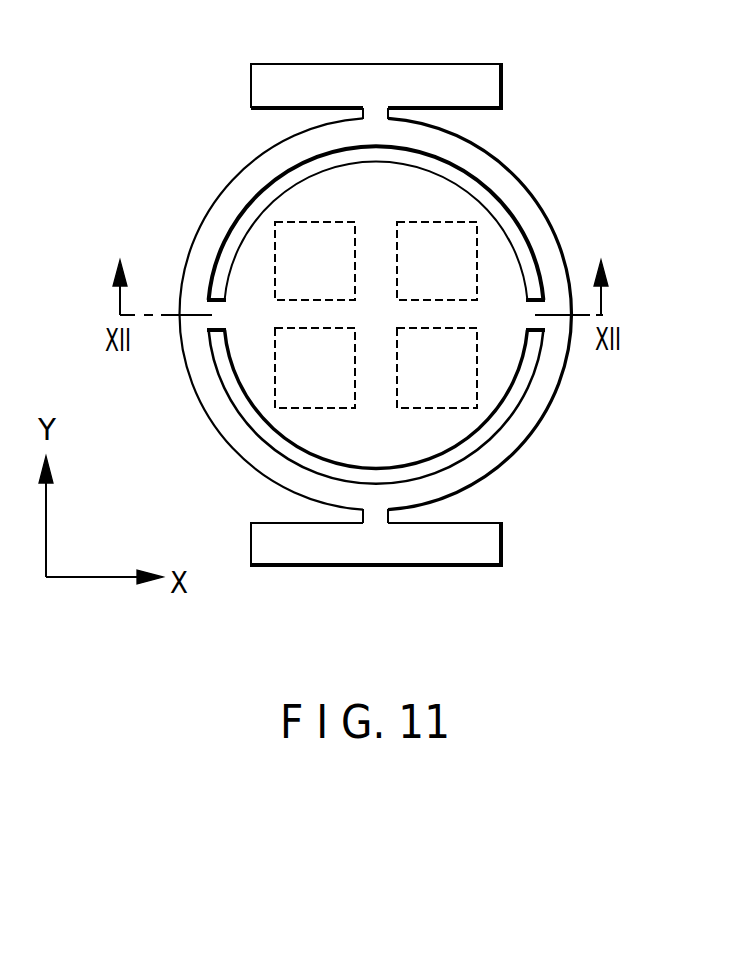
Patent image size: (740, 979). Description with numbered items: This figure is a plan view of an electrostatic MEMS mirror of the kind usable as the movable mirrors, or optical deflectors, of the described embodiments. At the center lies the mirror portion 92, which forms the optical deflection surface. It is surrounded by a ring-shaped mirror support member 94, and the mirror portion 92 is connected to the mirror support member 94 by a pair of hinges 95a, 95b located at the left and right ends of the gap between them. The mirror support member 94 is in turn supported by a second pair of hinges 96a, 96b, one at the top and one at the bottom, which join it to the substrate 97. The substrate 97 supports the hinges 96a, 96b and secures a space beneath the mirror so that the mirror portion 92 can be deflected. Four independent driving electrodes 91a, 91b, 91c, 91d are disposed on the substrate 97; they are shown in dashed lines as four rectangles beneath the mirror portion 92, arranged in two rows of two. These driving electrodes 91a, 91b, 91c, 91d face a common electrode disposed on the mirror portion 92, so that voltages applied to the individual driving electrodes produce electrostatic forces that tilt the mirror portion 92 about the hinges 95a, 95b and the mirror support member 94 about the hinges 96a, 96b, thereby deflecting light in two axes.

The driving electrode 91a is at (296, 222).
The driving electrode 91b is at (468, 243).
The driving electrode 91c is at (283, 390).
The driving electrode 91d is at (466, 398).
The mirror portion 92 is at (242, 290).
The mirror support member 94 is at (500, 175).
The hinge 95a is at (212, 300).
The hinge 95b is at (537, 304).
The hinge 96a is at (373, 107).
The hinge 96b is at (373, 523).
The substrate 97 is at (486, 547).